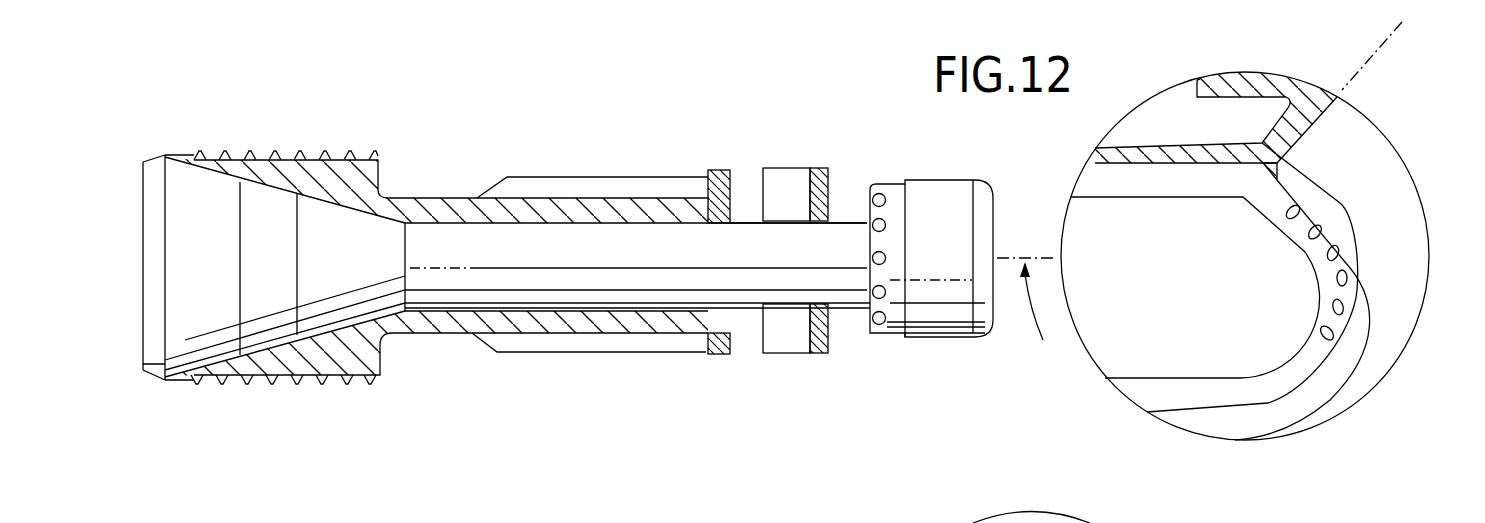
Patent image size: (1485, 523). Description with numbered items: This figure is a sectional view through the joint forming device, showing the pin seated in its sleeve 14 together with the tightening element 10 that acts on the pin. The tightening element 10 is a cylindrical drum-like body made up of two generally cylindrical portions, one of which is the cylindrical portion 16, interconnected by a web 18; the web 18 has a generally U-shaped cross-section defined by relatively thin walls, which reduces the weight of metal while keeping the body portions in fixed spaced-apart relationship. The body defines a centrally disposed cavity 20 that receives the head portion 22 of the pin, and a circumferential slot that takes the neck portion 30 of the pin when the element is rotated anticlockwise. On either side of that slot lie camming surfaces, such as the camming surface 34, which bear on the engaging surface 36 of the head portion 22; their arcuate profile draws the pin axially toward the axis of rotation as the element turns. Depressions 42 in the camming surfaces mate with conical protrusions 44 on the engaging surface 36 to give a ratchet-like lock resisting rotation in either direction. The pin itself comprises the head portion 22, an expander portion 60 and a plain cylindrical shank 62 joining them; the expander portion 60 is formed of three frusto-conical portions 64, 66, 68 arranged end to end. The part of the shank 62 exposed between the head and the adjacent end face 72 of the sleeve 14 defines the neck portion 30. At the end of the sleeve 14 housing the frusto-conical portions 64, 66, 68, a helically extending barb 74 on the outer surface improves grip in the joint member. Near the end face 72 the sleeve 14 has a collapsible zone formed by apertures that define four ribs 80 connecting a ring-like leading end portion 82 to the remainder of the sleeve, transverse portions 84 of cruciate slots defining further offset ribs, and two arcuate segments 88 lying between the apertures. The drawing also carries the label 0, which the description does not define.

The angle of misalignment 0 is at (1361, 72).
The tightening element 10 is at (1283, 73).
The sleeve 14 is at (576, 352).
The cylindrical portion 16 is at (1410, 310).
The web 18 is at (1227, 73).
The cavity 20 is at (1195, 333).
The head portion 22 is at (942, 327).
The neck portion 30 is at (843, 233).
The camming surface 34 is at (1288, 364).
The engaging surface 36 is at (897, 208).
The depressions 42 is at (1338, 290).
The conical protrusions 44 is at (878, 337).
The expander portion 60 is at (268, 222).
The shank 62 is at (510, 245).
The frusto-conical portion 64 is at (384, 290).
The frusto-conical portion 66 is at (277, 328).
The frusto-conical portion 68 is at (181, 362).
The end face 72 is at (833, 168).
The helically extending barb 74 is at (221, 153).
The ribs 80 is at (775, 343).
The ring-like leading end portion 82 is at (819, 355).
The transverse portions 84 is at (738, 348).
The arcuate segments 88 is at (712, 172).